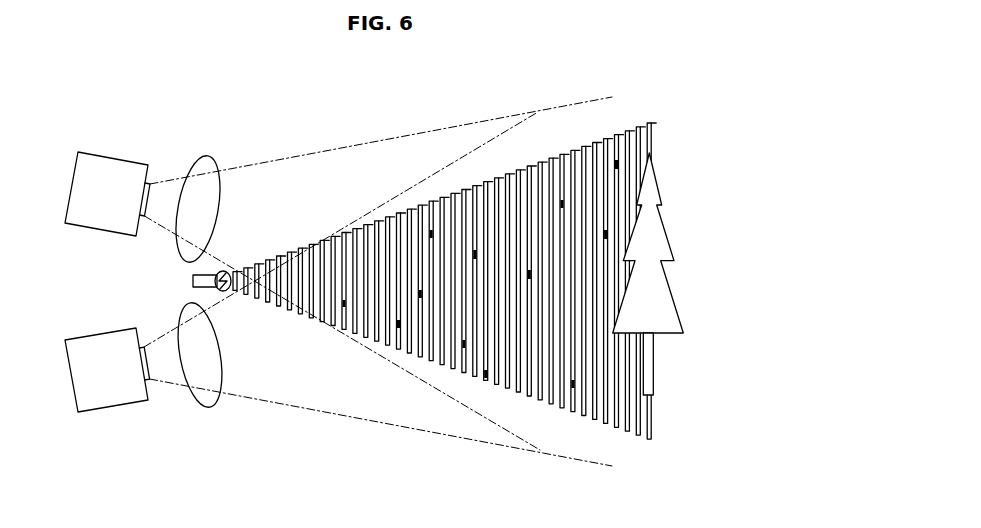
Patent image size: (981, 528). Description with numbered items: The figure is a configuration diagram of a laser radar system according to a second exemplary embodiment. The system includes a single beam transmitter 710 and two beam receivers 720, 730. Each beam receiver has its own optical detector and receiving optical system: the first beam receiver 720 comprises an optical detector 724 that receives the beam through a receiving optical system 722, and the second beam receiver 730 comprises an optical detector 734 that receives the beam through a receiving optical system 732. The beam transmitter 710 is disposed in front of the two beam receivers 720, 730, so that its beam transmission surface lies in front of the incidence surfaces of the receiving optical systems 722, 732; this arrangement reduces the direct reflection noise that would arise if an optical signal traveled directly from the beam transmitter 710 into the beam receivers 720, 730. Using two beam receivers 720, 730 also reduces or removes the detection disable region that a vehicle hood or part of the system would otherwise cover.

The beam transmitter 710 is at (193, 282).
The beam receiver 720 is at (146, 162).
The receiving optical system 722 is at (197, 181).
The optical detector 724 is at (116, 170).
The beam receiver 730 is at (147, 395).
The receiving optical system 732 is at (207, 410).
The optical detector 734 is at (123, 407).